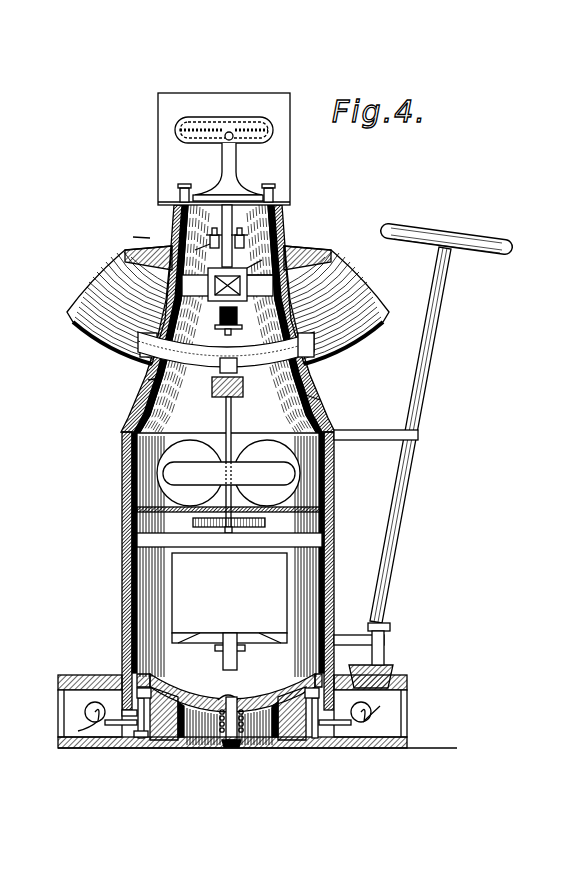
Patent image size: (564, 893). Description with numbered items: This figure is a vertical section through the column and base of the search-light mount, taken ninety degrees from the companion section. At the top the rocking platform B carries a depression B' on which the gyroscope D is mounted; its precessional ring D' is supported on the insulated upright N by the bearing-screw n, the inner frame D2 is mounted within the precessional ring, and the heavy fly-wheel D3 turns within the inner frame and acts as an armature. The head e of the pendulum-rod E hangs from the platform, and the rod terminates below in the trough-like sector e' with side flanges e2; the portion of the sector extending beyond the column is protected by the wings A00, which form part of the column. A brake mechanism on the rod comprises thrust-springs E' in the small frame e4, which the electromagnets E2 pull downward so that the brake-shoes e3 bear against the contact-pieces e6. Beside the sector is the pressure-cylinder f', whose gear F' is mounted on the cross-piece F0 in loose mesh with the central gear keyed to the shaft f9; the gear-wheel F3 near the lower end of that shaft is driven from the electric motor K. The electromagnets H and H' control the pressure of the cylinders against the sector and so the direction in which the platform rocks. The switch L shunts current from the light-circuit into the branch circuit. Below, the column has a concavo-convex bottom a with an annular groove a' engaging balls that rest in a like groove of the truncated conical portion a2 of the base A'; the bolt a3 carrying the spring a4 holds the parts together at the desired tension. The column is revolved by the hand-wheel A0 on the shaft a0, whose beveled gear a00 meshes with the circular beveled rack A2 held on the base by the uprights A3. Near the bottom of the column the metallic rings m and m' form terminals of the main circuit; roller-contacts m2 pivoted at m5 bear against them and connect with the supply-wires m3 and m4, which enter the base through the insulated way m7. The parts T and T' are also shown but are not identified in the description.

The rocking platform B is at (245, 149).
The depression B' is at (195, 205).
The gyroscope D is at (197, 140).
The precessional ring D' is at (247, 121).
The inner frame D2 is at (247, 123).
The fly-wheel D3 is at (207, 127).
The upright N is at (223, 180).
The bearing-screw n is at (238, 145).
The valve left T is at (181, 235).
The central tube T' is at (283, 226).
The pendulum-rod E is at (265, 231).
The thrust-springs E' is at (294, 243).
The electromagnets E2 is at (147, 350).
The switch L is at (133, 237).
The head e is at (227, 285).
The sector e' is at (178, 343).
The side flanges e2 is at (307, 360).
The brake-shoes e3 is at (240, 302).
The frame e4 is at (210, 241).
The contact-pieces e6 is at (253, 272).
The wings A00 is at (375, 276).
The hand-wheel A0 is at (500, 238).
The shaft a0 is at (402, 528).
The gear F' is at (279, 387).
The cross-piece F0 is at (320, 400).
The gear-wheel F3 is at (160, 533).
The cylinder f' is at (136, 388).
The shaft f9 is at (232, 420).
The electromagnet H is at (258, 473).
The electromagnet H' is at (190, 481).
The electric motor K is at (229, 602).
The annular groove a' is at (212, 640).
The concavo-convex bottom a is at (205, 678).
The truncated conical portion a2 is at (283, 737).
The bolt a3 is at (227, 745).
The spring a4 is at (243, 727).
The beveled gear a00 is at (388, 668).
The base A' is at (257, 759).
The circular beveled rack A2 is at (443, 668).
The uprights A3 is at (428, 716).
The metallic ring m is at (379, 639).
The metallic ring m' is at (222, 756).
The roller-contacts m2 is at (127, 747).
The supply-wire m3 is at (368, 721).
The supply-wire m4 is at (105, 723).
The pivot m5 is at (320, 747).
The insulated way m7 is at (124, 740).